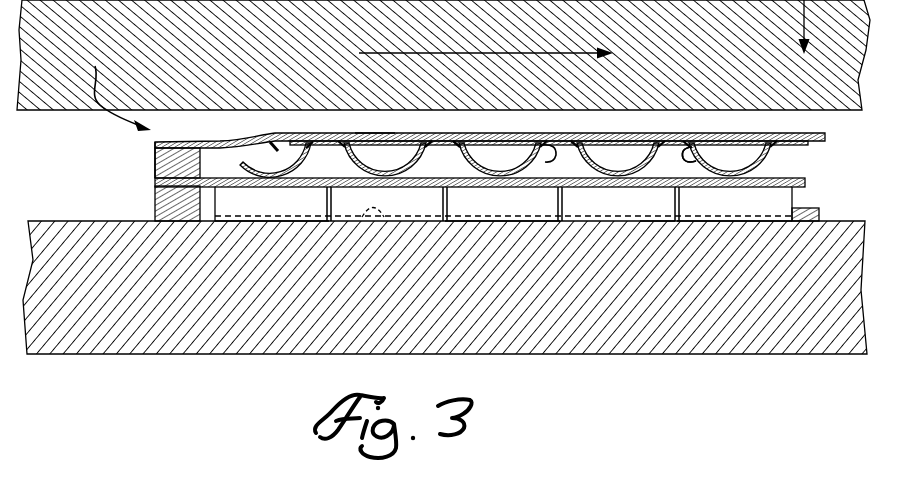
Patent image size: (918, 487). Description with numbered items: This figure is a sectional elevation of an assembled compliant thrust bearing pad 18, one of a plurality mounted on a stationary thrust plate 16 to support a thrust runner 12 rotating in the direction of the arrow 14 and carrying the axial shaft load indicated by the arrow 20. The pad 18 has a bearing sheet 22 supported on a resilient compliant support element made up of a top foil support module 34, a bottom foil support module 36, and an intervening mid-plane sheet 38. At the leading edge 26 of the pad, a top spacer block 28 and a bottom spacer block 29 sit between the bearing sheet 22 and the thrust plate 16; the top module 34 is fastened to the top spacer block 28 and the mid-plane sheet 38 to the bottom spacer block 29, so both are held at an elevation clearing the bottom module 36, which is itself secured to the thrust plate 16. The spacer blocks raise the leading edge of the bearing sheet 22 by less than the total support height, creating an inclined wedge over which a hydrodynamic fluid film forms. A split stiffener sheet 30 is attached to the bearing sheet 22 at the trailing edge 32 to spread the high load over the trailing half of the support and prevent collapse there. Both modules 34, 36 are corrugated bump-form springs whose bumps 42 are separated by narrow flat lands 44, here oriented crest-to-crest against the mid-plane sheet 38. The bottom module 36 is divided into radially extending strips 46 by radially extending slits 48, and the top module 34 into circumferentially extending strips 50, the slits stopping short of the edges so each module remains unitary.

The thrust runner 12 is at (216, 34).
The arrow indicating direction of rotation 14 is at (434, 52).
The thrust plate 16 is at (108, 301).
The bearing pad 18 is at (114, 87).
The arrow indicating axial load 20 is at (806, 38).
The bearing sheet 22 is at (376, 133).
The leading edge 26 is at (155, 150).
The top spacer block 28 is at (170, 171).
The bottom spacer block 29 is at (170, 201).
The split stiffener sheet 30 is at (418, 150).
The trailing edge 32 is at (825, 138).
The top foil support module 34 is at (792, 163).
The bottom foil support module 36 is at (803, 198).
The mid-plane sheet 38 is at (482, 146).
The bumps 42 is at (564, 155).
The lands 44 is at (716, 160).
The radially extending strips 46 is at (248, 222).
The radially extending slits 48 is at (340, 222).
The circumferentially extending strips 50 is at (250, 162).